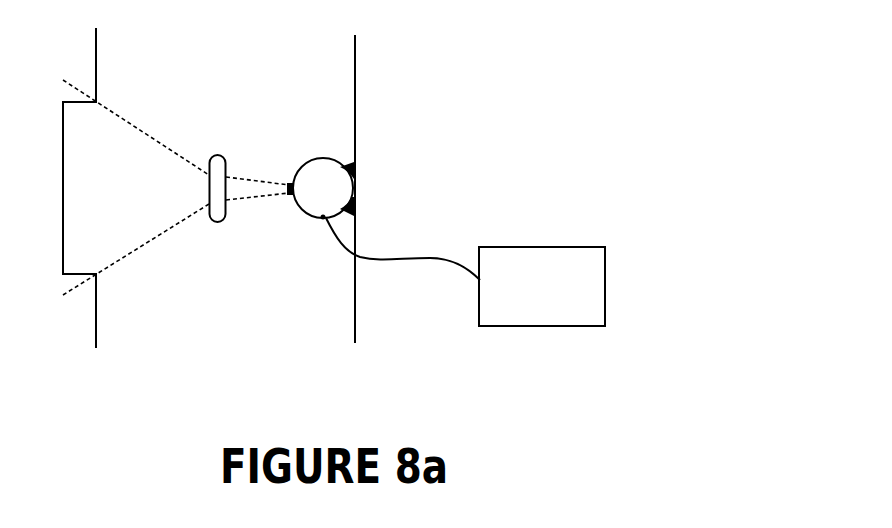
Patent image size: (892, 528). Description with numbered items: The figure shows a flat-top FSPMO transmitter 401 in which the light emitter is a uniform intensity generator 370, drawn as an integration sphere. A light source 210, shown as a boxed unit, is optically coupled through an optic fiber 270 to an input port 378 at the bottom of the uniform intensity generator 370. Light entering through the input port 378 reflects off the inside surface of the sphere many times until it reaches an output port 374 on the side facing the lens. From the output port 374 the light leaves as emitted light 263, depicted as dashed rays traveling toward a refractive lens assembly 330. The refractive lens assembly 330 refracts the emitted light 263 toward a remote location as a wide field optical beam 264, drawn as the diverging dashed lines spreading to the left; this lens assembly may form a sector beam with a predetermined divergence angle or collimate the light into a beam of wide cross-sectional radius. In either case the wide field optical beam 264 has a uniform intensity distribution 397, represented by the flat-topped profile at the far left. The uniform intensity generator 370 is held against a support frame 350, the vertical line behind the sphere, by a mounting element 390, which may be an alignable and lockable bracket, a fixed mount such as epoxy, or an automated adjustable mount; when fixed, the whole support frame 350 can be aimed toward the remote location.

The uniform intensity distribution 397 is at (97, 52).
The wide field optical beam 264 is at (128, 130).
The refractive lens assembly 330 is at (210, 194).
The emitted light 263 is at (258, 181).
The output port 374 is at (289, 201).
The uniform intensity generator 370 is at (321, 170).
The support frame 350 is at (356, 80).
The mounting element 390 is at (356, 206).
The input port 378 is at (323, 219).
The optic fiber 270 is at (408, 259).
The light source 210 is at (606, 265).
The flat-top FSPMO transmitter 401 is at (583, 53).